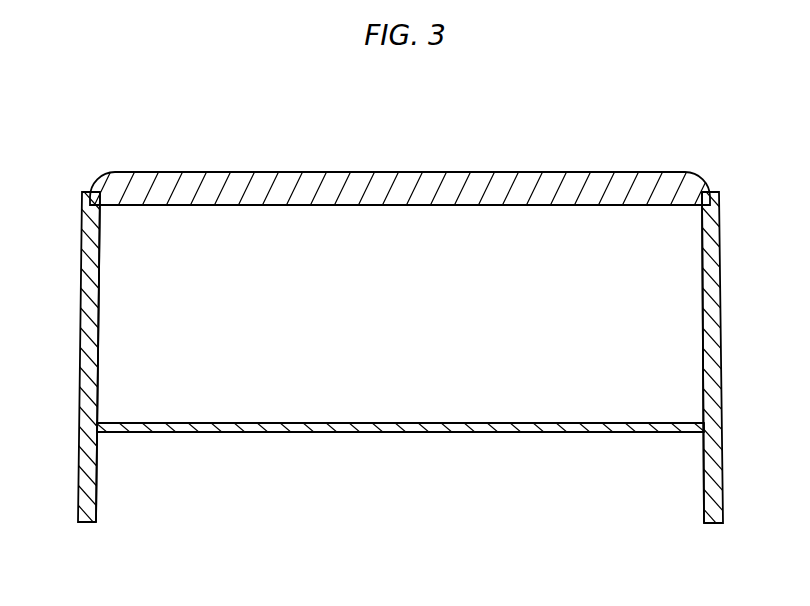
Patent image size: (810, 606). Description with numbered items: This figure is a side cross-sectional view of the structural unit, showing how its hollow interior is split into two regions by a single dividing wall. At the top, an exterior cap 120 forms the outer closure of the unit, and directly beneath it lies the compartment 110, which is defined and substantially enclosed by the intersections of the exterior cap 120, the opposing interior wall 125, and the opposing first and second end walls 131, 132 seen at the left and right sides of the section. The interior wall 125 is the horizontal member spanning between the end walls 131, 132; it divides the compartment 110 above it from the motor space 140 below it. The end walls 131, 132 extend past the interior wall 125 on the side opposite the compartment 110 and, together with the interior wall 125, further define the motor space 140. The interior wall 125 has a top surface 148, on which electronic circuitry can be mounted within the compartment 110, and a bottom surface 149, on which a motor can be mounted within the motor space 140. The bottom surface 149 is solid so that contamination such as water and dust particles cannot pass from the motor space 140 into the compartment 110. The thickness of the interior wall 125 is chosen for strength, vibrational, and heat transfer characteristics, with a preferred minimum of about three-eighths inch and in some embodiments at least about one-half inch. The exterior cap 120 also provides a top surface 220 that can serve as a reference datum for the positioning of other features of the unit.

The compartment 110 is at (100, 337).
The exterior cap 120 is at (438, 170).
The interior wall 125 is at (370, 437).
The first end wall 131 is at (720, 291).
The second end wall 132 is at (81, 292).
The motor space 140 is at (170, 462).
The top surface 148 is at (243, 428).
The bottom surface 149 is at (547, 433).
The top surface 220 is at (538, 172).